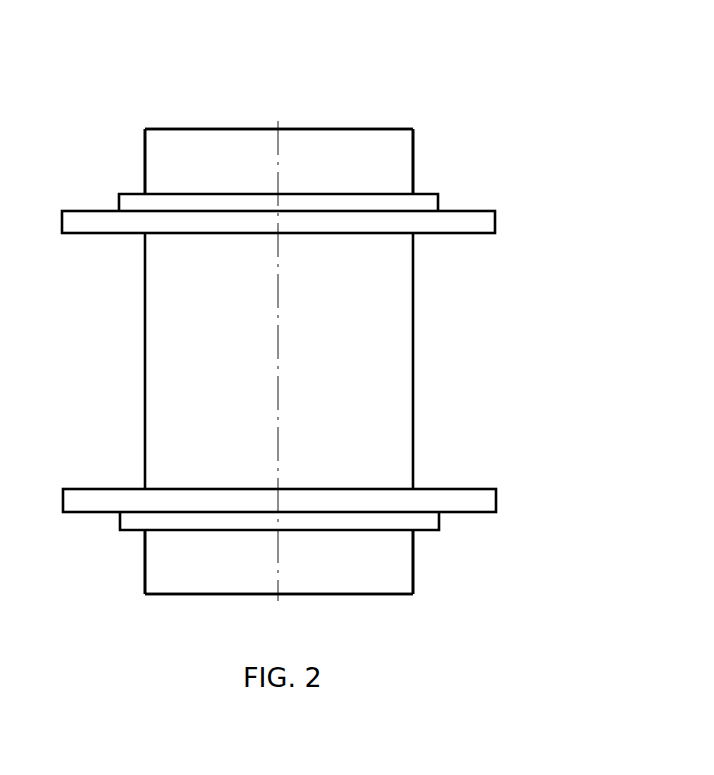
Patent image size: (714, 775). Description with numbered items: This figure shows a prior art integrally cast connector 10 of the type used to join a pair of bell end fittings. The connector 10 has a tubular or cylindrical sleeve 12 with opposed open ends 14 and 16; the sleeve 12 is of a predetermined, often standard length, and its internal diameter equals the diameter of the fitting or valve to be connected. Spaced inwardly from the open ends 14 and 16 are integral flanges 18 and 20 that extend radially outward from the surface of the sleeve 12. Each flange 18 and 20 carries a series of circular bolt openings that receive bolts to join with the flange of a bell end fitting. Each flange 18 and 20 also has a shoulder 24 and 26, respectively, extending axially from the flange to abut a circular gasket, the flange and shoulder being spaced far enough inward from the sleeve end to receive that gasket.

The integrally cast connector 10 is at (466, 341).
The sleeve 12 is at (362, 410).
The open end 14 is at (329, 128).
The open end 16 is at (332, 595).
The flange 18 is at (487, 218).
The flange 20 is at (483, 500).
The shoulder 24 is at (432, 200).
The shoulder 26 is at (430, 522).